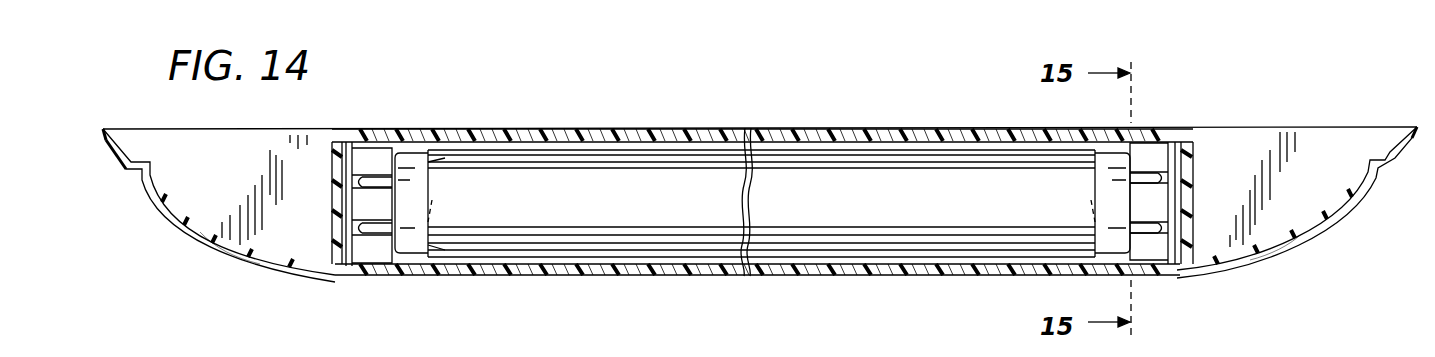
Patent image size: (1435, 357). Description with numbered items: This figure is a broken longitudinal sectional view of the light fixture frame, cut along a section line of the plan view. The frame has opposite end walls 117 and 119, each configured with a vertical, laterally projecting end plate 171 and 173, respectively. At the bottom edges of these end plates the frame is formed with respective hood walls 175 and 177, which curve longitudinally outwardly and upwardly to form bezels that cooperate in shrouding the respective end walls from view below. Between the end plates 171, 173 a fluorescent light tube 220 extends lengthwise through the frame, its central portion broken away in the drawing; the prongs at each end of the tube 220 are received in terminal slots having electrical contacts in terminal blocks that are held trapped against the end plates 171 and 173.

The end wall 117 is at (320, 140).
The end wall 119 is at (1197, 147).
The end plate 171 is at (338, 177).
The end plate 173 is at (1196, 172).
The hood wall 175 is at (231, 251).
The hood wall 177 is at (1310, 238).
The fluorescent light tube 220 is at (540, 142).